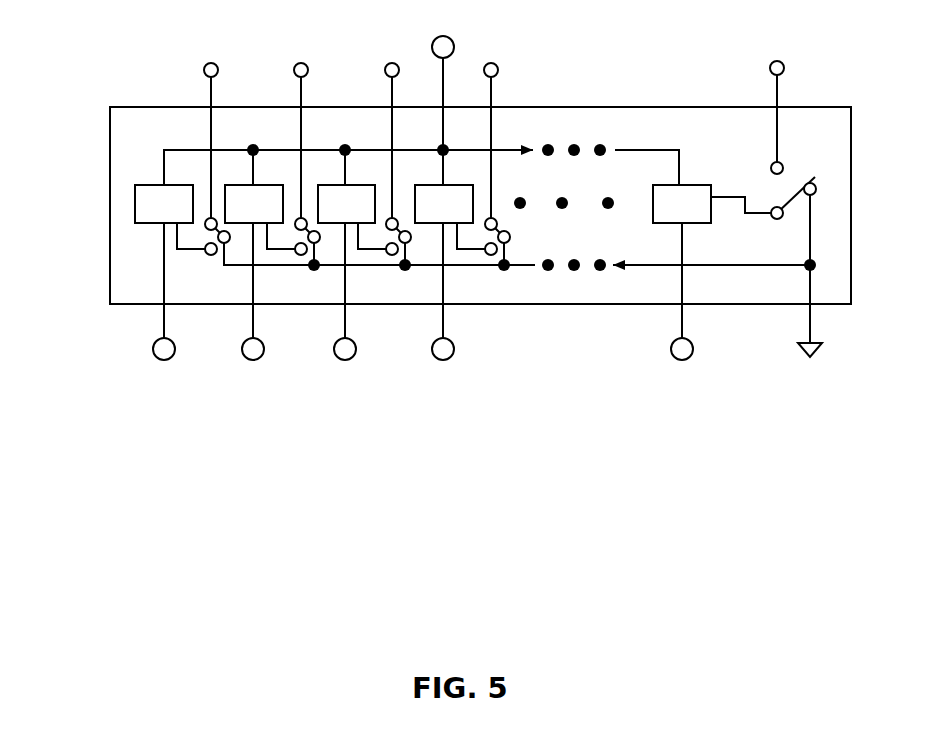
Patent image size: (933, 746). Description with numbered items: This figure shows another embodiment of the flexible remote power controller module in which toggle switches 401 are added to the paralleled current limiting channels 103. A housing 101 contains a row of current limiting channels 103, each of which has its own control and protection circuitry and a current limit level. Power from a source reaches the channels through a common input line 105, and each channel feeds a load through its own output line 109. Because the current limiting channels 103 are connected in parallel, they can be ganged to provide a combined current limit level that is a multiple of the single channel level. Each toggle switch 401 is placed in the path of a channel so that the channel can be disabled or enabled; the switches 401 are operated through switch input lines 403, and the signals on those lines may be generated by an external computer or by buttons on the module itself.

The housing 101 is at (575, 107).
The current limiting channel 103 is at (130, 206).
The input line 105 is at (443, 35).
The output line 109 is at (155, 330).
The toggle switch 401 is at (521, 238).
The switch input line 403 is at (200, 88).